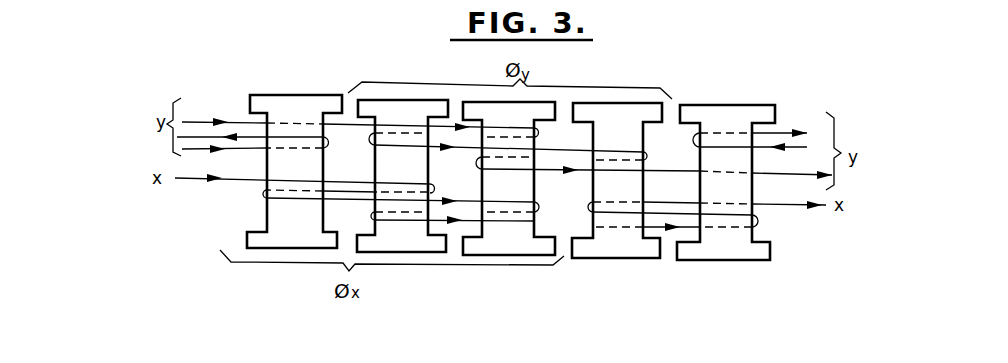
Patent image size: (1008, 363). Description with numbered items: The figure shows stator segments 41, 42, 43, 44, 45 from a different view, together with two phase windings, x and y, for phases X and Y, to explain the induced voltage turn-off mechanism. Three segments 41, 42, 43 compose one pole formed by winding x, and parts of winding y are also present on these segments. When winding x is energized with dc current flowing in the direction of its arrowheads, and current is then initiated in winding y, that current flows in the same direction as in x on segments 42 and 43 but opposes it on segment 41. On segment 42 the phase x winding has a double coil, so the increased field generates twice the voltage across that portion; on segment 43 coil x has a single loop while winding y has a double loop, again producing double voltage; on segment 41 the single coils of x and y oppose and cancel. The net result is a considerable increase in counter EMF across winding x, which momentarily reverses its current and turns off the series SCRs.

The stator segment 41 is at (290, 237).
The stator segment 42 is at (421, 237).
The stator segment 43 is at (523, 238).
The stator segment 44 is at (629, 245).
The stator segment 45 is at (740, 245).